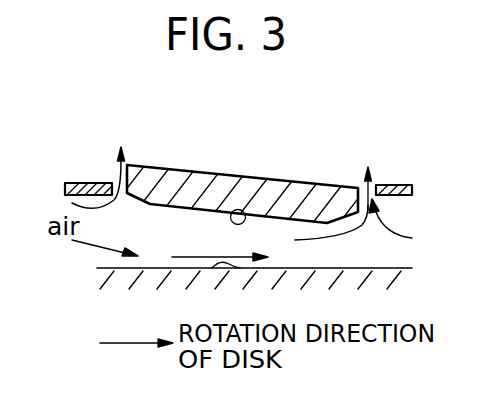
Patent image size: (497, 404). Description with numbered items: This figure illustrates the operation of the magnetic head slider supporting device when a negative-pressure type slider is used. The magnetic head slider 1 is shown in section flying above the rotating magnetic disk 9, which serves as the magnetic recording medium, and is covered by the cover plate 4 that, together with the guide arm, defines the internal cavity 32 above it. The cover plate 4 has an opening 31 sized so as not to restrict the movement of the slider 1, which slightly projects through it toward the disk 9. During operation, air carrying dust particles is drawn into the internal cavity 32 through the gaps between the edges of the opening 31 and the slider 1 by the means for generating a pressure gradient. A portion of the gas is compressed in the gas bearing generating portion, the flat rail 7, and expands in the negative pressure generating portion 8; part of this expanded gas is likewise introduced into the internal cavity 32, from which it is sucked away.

The magnetic head slider 1 is at (186, 171).
The cover plate 4 is at (403, 186).
The flat rail 7 is at (253, 191).
The negative pressure generating portion 8 is at (338, 212).
The magnetic disk 9 is at (212, 268).
The opening 31 is at (372, 194).
The internal cavity 32 is at (256, 108).